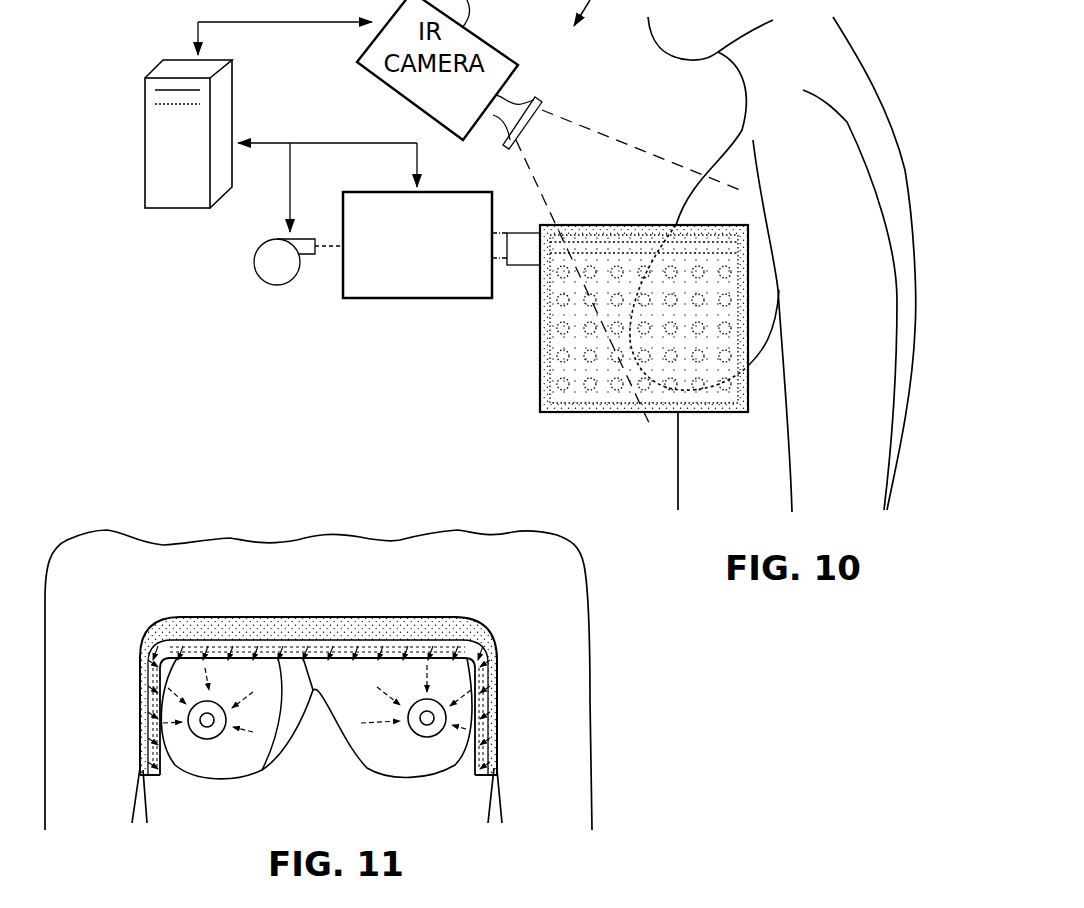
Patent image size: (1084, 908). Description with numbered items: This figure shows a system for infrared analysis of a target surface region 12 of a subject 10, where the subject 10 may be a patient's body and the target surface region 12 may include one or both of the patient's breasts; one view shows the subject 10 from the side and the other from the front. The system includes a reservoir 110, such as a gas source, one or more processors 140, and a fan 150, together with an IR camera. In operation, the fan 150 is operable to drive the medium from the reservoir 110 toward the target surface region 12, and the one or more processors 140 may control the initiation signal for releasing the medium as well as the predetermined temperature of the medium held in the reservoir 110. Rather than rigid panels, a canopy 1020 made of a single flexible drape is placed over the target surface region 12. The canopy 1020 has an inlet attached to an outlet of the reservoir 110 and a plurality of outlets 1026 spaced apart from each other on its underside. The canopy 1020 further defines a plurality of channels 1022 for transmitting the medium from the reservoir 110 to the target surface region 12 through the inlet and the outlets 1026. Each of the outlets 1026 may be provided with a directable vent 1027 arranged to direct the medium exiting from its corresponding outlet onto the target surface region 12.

In FIG. 10, the subject 10 is at (845, 120).
In FIG. 11, the subject 10 is at (458, 553).
In FIG. 10, the target surface region 12 is at (727, 312).
In FIG. 11, the target surface region 12 is at (418, 763).
In FIG. 10, the reservoir 110 is at (390, 300).
In FIG. 10, the one or more processors 140 is at (178, 208).
In FIG. 10, the fan 150 is at (277, 285).
In FIG. 10, the canopy 1020 is at (653, 225).
In FIG. 11, the canopy 1020 is at (260, 620).
In FIG. 10, the channels 1022 is at (608, 255).
In FIG. 11, the channels 1022 is at (352, 640).
In FIG. 10, the outlets 1026 is at (555, 353).
In FIG. 11, the outlets 1026 is at (317, 695).
In FIG. 10, the directable vent 1027 is at (517, 267).
In FIG. 11, the directable vent 1027 is at (260, 745).